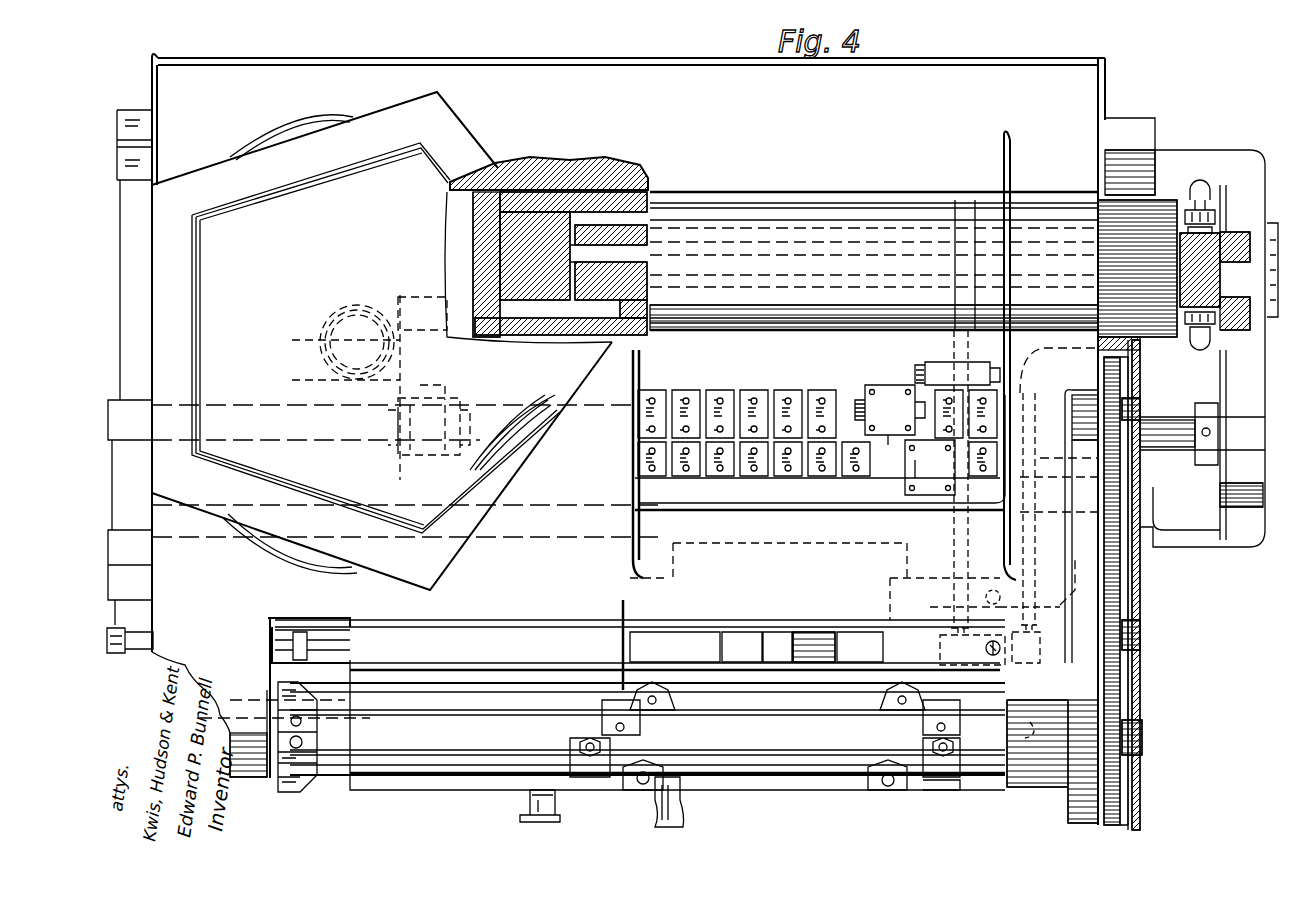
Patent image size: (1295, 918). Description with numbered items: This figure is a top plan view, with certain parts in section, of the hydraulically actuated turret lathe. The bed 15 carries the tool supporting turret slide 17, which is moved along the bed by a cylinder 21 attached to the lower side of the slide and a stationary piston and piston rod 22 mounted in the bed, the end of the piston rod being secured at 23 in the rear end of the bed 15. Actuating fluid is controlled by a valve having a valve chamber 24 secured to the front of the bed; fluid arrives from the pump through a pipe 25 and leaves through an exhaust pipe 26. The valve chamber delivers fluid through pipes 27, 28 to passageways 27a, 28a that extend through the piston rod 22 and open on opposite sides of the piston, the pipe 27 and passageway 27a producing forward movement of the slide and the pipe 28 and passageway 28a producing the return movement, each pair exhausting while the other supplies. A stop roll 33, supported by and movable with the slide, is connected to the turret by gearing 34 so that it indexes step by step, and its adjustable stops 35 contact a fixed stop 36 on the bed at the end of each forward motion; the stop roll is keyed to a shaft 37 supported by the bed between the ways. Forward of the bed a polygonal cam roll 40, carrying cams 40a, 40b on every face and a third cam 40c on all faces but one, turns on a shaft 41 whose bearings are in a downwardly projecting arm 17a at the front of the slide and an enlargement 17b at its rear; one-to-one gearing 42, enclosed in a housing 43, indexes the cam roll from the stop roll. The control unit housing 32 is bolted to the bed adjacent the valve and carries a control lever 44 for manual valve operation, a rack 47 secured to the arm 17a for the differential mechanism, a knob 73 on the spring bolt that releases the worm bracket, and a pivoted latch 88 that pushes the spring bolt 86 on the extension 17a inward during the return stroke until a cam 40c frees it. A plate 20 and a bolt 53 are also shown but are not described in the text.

The bed 15 is at (1200, 135).
The turret slide 17 is at (592, 58).
The downwardly projecting arm 17a is at (261, 714).
The enlargement 17b is at (1040, 787).
The hinged cover plate 20 is at (480, 128).
The cylinder 21 is at (595, 220).
The piston and piston rod 22 is at (545, 210).
The securing point of piston rod 23 is at (1262, 320).
The valve chamber 24 is at (888, 585).
The supply pipe 25 is at (985, 658).
The exhaust pipe 26 is at (990, 590).
The pipe 27 is at (1205, 352).
The passageway 27a is at (624, 330).
The pipe 28 is at (1200, 185).
The passageway 28a is at (648, 186).
The housing 32 is at (415, 790).
The stop roll 33 is at (795, 390).
The gearing 34 is at (408, 432).
The stops 35 is at (890, 392).
The fixed stop 36 is at (318, 335).
The shaft 37 is at (1172, 452).
The cam roll 40 is at (775, 745).
The cam 40a is at (600, 772).
The cam 40b is at (945, 778).
The third cam 40c is at (308, 772).
The shaft 41 is at (1142, 738).
The gearing 42 is at (1140, 608).
The housing 43 is at (1140, 690).
The control lever 44 is at (683, 803).
The rack 47 is at (774, 655).
The bolt 53 is at (112, 584).
The knob 73 is at (528, 816).
The spring bolt 86 is at (285, 624).
The pivoted latch 88 is at (308, 640).